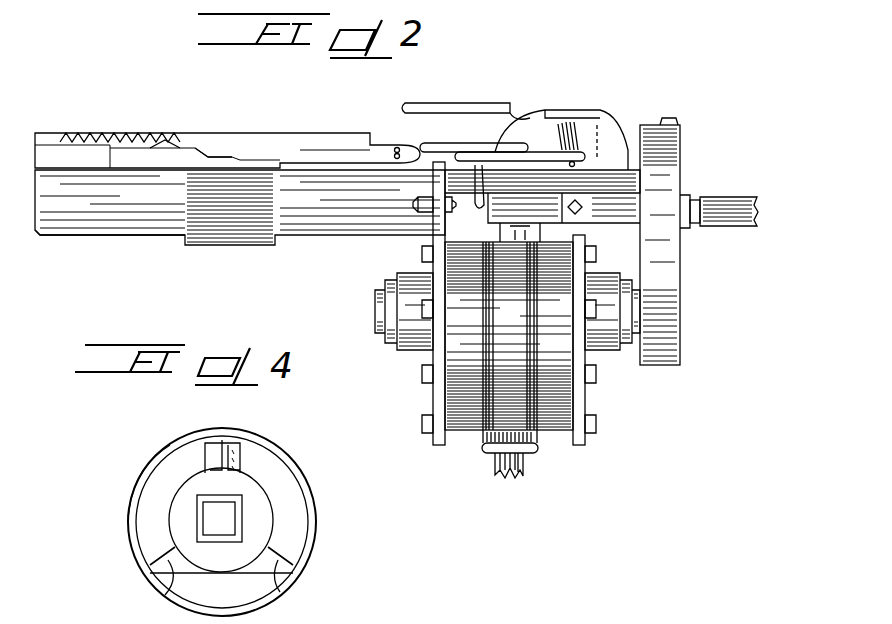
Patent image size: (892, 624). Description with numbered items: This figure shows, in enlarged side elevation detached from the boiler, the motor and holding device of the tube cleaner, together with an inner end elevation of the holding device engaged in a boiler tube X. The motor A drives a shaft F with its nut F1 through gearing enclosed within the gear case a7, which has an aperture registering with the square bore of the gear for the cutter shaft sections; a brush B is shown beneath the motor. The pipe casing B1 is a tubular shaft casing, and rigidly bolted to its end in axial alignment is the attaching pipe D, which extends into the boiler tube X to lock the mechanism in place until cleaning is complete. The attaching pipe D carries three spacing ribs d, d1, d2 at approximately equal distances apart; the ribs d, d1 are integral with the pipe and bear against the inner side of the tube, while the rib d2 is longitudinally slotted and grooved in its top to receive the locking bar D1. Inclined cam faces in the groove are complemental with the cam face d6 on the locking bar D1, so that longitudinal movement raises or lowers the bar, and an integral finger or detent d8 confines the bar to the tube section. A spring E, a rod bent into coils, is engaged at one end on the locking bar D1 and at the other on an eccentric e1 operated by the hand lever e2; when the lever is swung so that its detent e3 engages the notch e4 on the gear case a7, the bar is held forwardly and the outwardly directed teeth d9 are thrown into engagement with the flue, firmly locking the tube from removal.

In FIG. 2, the locking bar D1 is at (240, 130).
In FIG. 4, the locking bar D1 is at (215, 455).
In FIG. 2, the spacing rib d2 is at (80, 155).
In FIG. 4, the spacing rib d2 is at (240, 452).
In FIG. 2, the outwardly directed teeth d9 is at (160, 140).
In FIG. 2, the cam face d6 is at (225, 155).
In FIG. 2, the attaching pipe D is at (365, 218).
In FIG. 4, the attaching pipe D is at (262, 523).
In FIG. 2, the spacing rib d1 is at (130, 225).
In FIG. 4, the spacing rib d1 is at (168, 580).
In FIG. 2, the hand lever e2 is at (517, 112).
In FIG. 2, the detent e3 is at (510, 118).
In FIG. 2, the spring E is at (548, 108).
In FIG. 2, the eccentric e1 is at (558, 128).
In FIG. 2, the pipe casing B1 is at (595, 185).
In FIG. 2, the gear case a7 is at (672, 168).
In FIG. 2, the notch e4 is at (672, 120).
In FIG. 2, the driving shaft F is at (735, 228).
In FIG. 2, the nut F1 is at (695, 225).
In FIG. 2, the motor armature A is at (555, 355).
In FIG. 2, the brush B is at (510, 478).
In FIG. 4, the spacing rib d is at (285, 566).
In FIG. 4, the finger or detent d8 is at (232, 472).
In FIG. 4, the boiler tube x is at (310, 502).